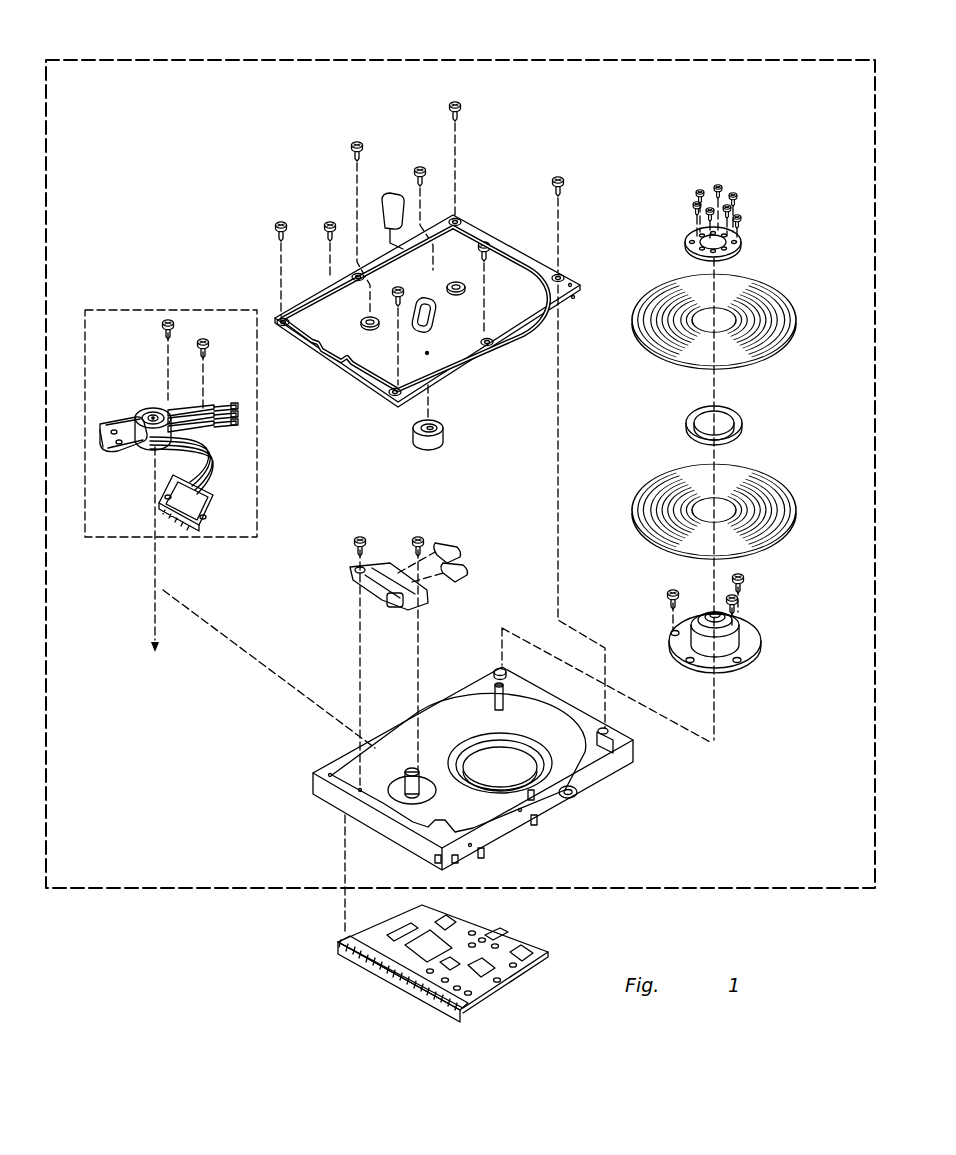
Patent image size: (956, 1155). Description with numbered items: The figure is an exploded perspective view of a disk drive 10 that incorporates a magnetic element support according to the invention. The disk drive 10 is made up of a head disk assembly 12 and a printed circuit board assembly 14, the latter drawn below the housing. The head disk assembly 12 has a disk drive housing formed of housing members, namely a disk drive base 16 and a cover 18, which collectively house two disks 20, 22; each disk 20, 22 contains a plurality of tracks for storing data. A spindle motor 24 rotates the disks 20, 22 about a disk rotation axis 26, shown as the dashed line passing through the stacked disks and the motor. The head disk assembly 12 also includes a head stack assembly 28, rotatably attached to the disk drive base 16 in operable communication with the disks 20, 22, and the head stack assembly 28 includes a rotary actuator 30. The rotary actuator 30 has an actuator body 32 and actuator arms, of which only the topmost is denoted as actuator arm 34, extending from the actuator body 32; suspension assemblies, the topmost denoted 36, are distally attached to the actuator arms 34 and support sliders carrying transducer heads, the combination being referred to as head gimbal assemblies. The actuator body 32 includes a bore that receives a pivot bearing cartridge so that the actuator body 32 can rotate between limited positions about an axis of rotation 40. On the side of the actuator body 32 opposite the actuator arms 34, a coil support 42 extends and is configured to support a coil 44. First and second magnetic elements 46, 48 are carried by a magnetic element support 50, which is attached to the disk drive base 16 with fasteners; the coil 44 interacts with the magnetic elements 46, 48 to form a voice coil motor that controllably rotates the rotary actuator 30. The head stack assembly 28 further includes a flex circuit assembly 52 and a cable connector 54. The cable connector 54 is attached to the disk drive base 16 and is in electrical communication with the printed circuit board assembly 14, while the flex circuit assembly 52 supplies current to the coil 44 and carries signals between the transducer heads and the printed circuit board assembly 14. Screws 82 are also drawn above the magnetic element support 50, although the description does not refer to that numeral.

The disk drive 10 is at (243, 50).
The head disk assembly 12 is at (181, 890).
The printed circuit board assembly 14 is at (538, 965).
The disk drive base 16 is at (517, 838).
The cover 18 is at (508, 313).
The disk 20 is at (648, 298).
The disk 22 is at (648, 490).
The spindle motor 24 is at (745, 632).
The disk rotation axis 26 is at (720, 708).
The head stack assembly 28 is at (154, 404).
The rotary actuator 30 is at (153, 410).
The actuator body 32 is at (138, 412).
The actuator arm 34 is at (184, 412).
The suspension assembly 36 is at (213, 409).
The axis of rotation 40 is at (158, 574).
The coil support 42 is at (98, 437).
The coil 44 is at (112, 423).
The first magnetic element 46 is at (469, 568).
The second magnetic element 48 is at (453, 546).
The magnetic element support 50 is at (363, 596).
The flex circuit assembly 52 is at (207, 454).
The cable connector 54 is at (173, 506).
The screws 82 is at (416, 531).